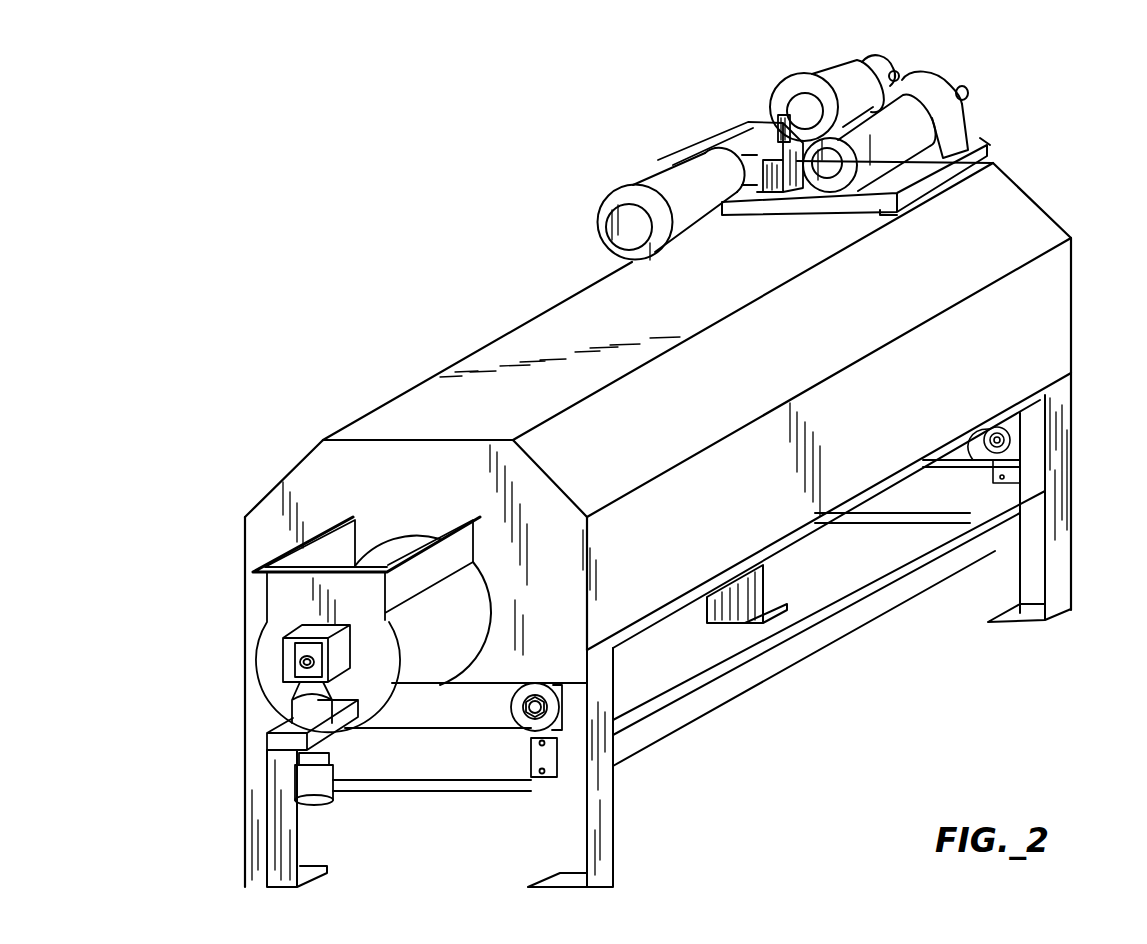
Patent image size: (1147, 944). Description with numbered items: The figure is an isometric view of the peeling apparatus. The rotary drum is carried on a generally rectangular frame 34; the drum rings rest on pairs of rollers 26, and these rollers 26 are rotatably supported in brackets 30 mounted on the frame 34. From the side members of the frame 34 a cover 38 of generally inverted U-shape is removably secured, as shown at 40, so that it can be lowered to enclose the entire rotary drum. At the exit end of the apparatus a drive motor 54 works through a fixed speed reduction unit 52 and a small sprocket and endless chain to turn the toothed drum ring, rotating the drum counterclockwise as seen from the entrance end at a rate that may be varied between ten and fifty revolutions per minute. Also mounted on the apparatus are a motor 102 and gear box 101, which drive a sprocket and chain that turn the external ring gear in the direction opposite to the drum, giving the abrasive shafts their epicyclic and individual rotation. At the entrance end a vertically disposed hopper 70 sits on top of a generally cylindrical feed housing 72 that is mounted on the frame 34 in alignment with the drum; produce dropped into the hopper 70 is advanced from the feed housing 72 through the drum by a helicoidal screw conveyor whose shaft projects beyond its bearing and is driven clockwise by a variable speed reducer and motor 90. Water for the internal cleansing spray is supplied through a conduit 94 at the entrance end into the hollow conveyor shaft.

The rollers 26 is at (517, 700).
The brackets 30 is at (531, 760).
The frame 34 is at (604, 703).
The cover 38 is at (1062, 305).
The securing point of cover 40 is at (793, 540).
The fixed speed reduction unit 52 is at (928, 86).
The drive motor 54 is at (958, 194).
The hopper 70 is at (281, 600).
The feed housing 72 is at (473, 622).
The variable speed reducer and motor 90 is at (268, 742).
The conduit 94 is at (285, 660).
The gear box 101 is at (822, 86).
The motor 102 is at (653, 187).